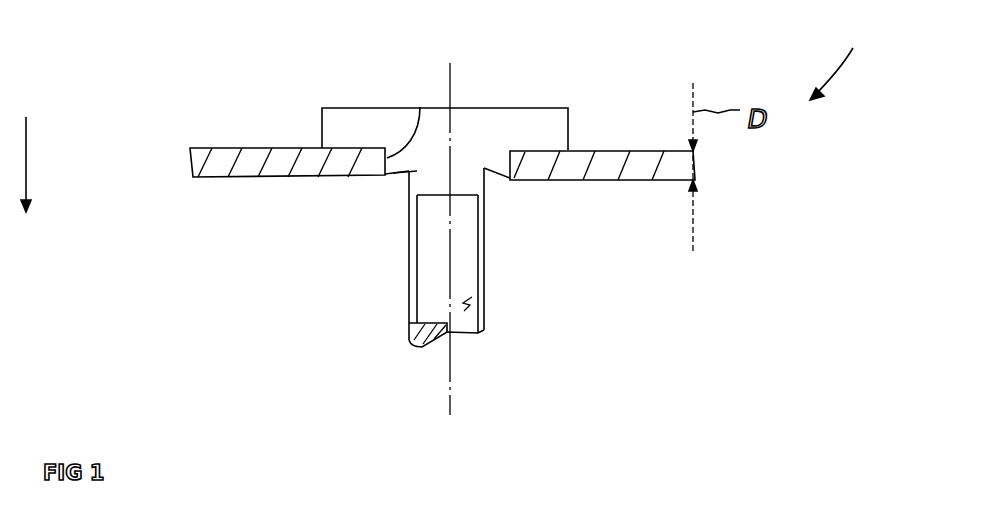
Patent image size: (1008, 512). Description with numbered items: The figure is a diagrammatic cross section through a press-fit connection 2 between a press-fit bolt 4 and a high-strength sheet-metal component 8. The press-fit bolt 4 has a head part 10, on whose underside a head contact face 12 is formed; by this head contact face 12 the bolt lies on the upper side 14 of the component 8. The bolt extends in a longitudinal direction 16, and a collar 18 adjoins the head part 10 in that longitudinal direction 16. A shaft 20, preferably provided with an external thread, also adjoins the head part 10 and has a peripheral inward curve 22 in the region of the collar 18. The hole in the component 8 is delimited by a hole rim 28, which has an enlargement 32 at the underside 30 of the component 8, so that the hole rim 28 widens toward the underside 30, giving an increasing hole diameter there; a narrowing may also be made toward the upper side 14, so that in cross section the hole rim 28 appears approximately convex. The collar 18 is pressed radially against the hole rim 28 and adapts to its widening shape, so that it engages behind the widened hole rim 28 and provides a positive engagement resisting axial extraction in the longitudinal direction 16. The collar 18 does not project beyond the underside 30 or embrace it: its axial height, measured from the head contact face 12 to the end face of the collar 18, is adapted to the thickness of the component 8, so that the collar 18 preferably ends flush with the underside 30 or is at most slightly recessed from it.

The press-fit connection 2 is at (886, 64).
The press-fit bolt 4 is at (484, 333).
The high-strength sheet-metal component 8 is at (602, 138).
The head part 10 is at (362, 123).
The head contact face 12 is at (553, 150).
The upper side 14 is at (270, 148).
The longitudinal direction 16 is at (63, 164).
The collar 18 is at (393, 173).
The shaft 20 is at (470, 260).
The peripheral inward curve 22 is at (494, 178).
The hole rim 28 is at (420, 107).
The underside 30 is at (618, 180).
The enlargement 32 is at (511, 180).